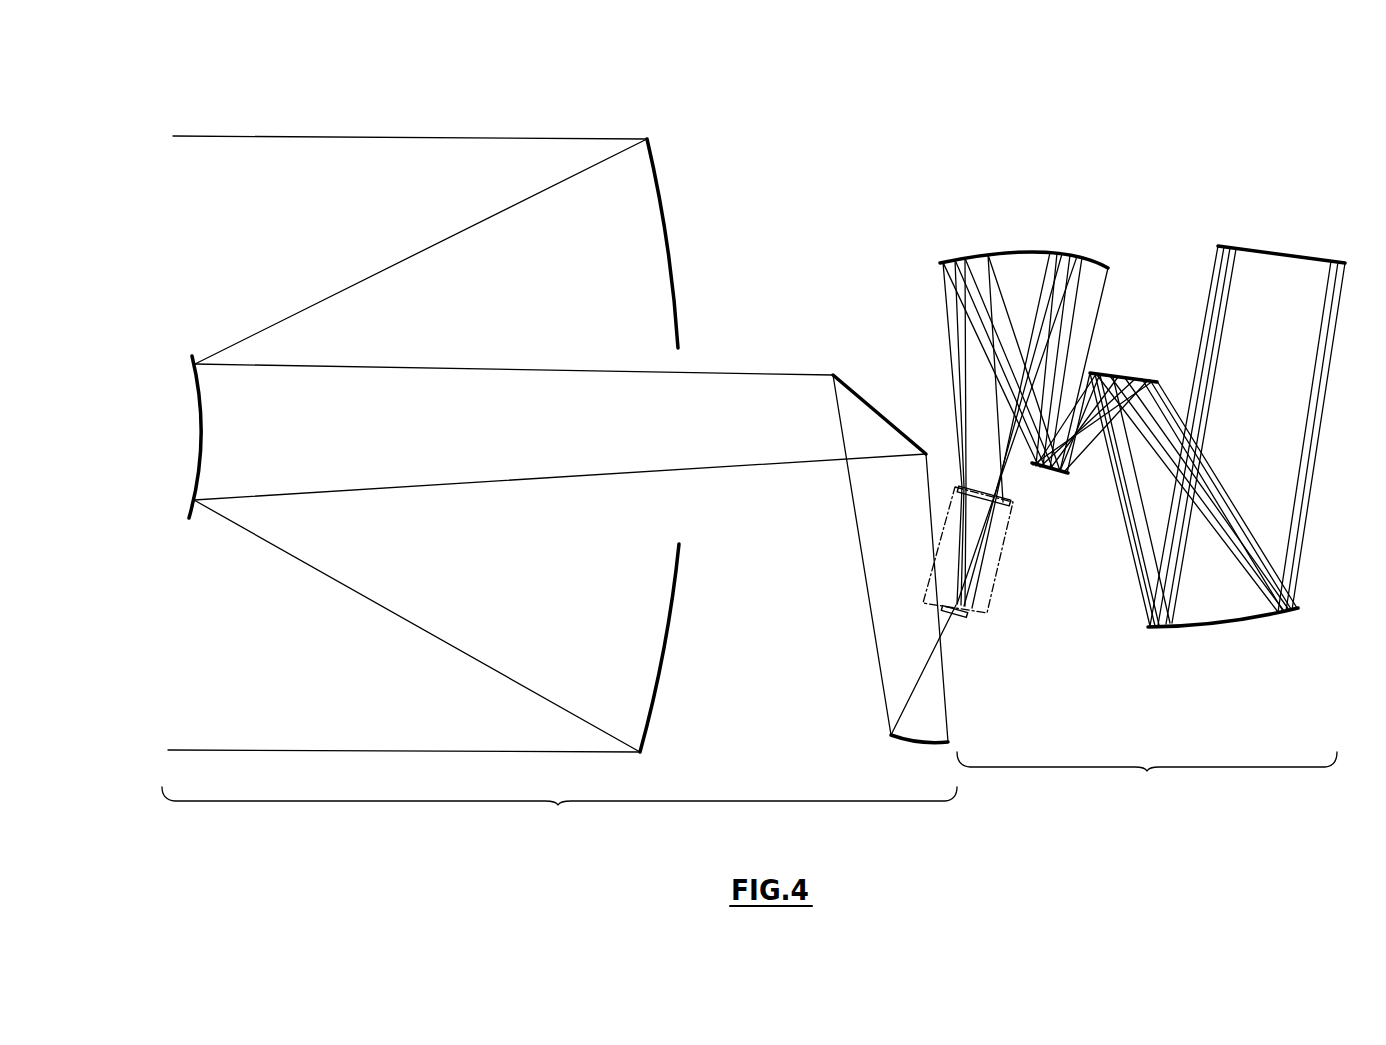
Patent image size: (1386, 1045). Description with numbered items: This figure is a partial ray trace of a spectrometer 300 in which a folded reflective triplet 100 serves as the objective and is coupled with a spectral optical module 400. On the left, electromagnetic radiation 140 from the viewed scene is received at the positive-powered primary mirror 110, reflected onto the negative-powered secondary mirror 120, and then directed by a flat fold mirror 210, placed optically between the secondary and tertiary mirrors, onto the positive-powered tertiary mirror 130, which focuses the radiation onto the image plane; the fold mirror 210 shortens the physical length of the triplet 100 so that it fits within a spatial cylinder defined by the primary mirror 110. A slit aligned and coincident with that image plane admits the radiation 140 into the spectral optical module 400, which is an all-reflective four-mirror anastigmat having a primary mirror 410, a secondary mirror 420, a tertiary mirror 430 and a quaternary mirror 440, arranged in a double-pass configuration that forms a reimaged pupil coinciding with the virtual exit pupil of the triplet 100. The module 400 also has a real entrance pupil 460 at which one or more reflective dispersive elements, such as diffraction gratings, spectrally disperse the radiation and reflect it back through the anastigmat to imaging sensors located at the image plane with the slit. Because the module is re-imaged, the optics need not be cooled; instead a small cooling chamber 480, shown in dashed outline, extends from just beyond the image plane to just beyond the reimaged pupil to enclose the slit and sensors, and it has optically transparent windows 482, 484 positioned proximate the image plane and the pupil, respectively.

The reflective triplet 100 is at (559, 821).
The primary mirror 110 is at (675, 222).
The secondary mirror 120 is at (190, 418).
The tertiary mirror 130 is at (912, 749).
The electromagnetic radiation 140 is at (452, 124).
The fold mirror 210 is at (858, 374).
The spectrometer 300 is at (930, 142).
The spectral optical module 400 is at (1147, 783).
The primary mirror 410 is at (1247, 625).
The secondary mirror 420 is at (1122, 368).
The tertiary mirror 430 is at (1063, 484).
The quaternary mirror 440 is at (1042, 246).
The real entrance pupil 460 is at (1283, 244).
The cooling chamber 480 is at (936, 514).
The optically transparent window 482 is at (967, 626).
The optically transparent window 484 is at (1024, 512).